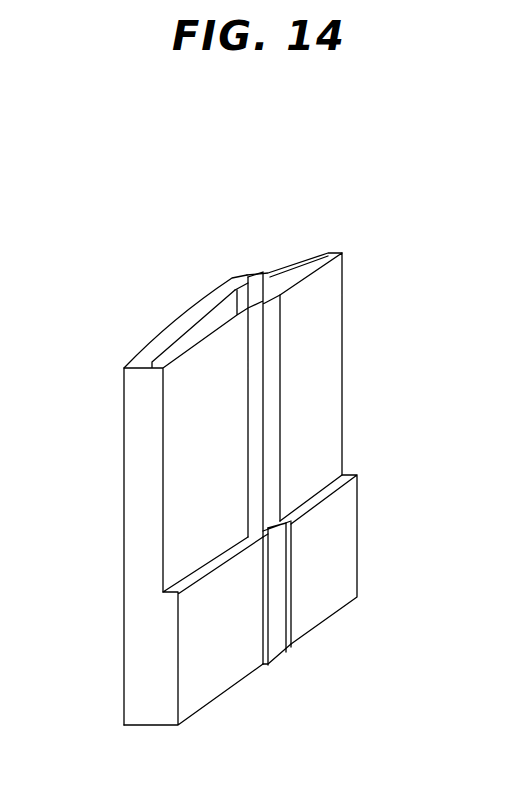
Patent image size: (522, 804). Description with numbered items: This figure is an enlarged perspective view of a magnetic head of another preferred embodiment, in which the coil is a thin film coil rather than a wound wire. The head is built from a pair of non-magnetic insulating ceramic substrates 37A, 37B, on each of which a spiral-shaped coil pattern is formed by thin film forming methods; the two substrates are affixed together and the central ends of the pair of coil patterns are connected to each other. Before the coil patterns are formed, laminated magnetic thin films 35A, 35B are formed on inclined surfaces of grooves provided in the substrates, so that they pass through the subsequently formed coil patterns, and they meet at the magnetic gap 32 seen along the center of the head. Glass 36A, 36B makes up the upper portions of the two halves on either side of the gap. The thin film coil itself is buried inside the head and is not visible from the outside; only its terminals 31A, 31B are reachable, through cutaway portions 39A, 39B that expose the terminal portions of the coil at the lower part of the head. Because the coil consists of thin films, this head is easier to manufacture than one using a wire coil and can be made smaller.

The magnetic gap 32 is at (247, 270).
The laminated magnetic thin film 35A is at (229, 281).
The laminated magnetic thin film 35B is at (283, 259).
The glass 36A is at (248, 440).
The glass 36B is at (277, 418).
The ceramic substrate 37A is at (195, 713).
The ceramic substrate 37B is at (318, 631).
The cutaway portion 39A is at (275, 521).
The cutaway portion 39B is at (271, 665).
The terminal of the thin film coil 31A is at (277, 551).
The terminal of the thin film coil 31B is at (287, 608).